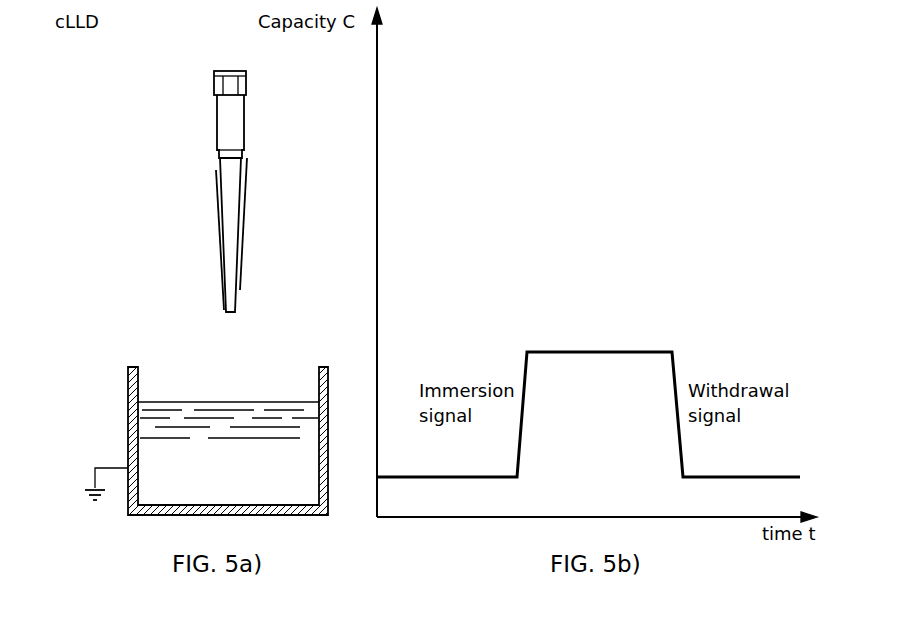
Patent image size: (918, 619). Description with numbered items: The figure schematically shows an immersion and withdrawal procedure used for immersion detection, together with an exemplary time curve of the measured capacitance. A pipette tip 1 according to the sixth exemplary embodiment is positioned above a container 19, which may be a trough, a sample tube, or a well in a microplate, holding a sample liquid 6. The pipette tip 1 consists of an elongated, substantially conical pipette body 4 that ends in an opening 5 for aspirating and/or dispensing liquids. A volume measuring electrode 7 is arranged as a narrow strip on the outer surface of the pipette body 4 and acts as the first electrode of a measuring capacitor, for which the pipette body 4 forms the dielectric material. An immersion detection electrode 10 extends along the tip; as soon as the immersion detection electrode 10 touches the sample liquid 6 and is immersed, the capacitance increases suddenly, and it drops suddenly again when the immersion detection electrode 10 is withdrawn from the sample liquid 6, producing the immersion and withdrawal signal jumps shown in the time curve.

The pipette tip 1 is at (223, 213).
The pipette body 4 is at (232, 132).
The volume measuring electrode 7 is at (245, 212).
The immersion detection electrode 10 is at (221, 220).
The opening 5 is at (235, 312).
The sample liquid 6 is at (180, 402).
The container 19 is at (123, 376).